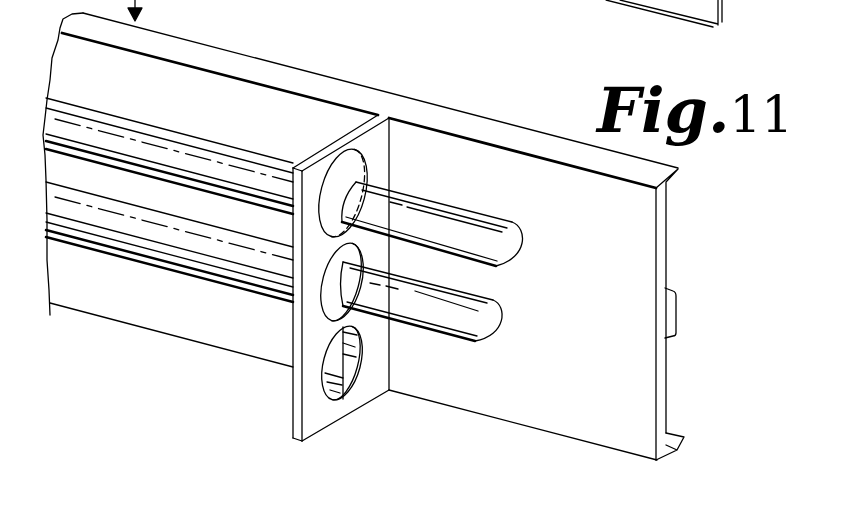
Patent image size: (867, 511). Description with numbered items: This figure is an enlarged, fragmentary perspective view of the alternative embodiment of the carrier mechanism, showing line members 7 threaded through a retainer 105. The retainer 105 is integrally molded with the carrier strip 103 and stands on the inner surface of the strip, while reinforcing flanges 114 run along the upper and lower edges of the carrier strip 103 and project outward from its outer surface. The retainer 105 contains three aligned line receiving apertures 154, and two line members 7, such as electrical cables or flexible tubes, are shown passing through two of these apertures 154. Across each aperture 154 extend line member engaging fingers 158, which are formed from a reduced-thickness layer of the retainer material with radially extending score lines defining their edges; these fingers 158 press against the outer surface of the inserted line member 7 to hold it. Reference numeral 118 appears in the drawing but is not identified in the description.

The line member 7 is at (177, 142).
The carrier strip 103 is at (417, 141).
The retainer 105 is at (292, 437).
The reinforcing flange 114 is at (684, 167).
The panel 118 is at (512, 5).
The line receiving aperture 154 is at (333, 152).
The line member engaging finger 158 is at (348, 348).